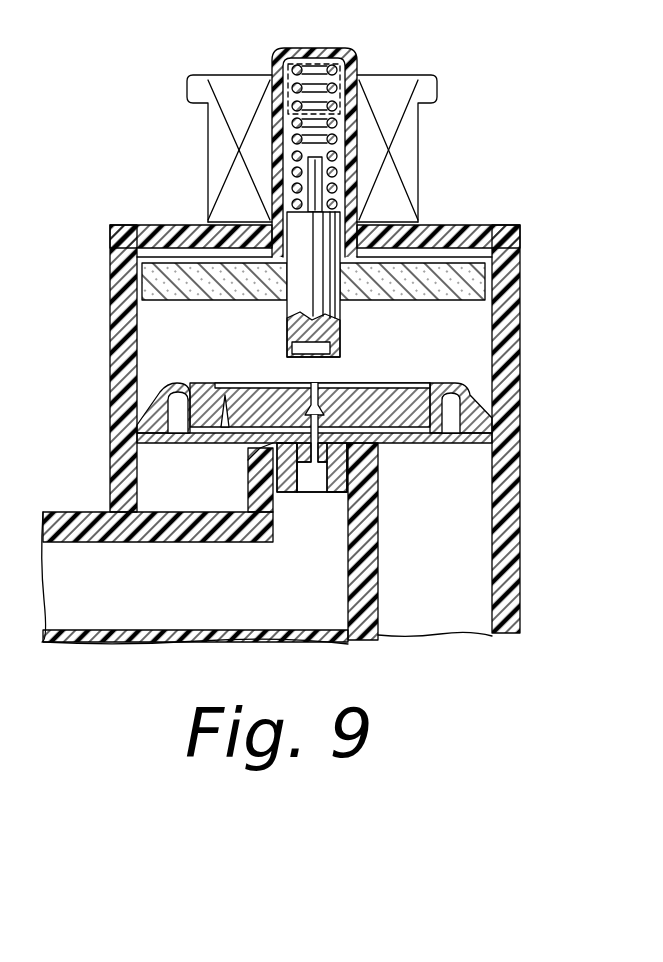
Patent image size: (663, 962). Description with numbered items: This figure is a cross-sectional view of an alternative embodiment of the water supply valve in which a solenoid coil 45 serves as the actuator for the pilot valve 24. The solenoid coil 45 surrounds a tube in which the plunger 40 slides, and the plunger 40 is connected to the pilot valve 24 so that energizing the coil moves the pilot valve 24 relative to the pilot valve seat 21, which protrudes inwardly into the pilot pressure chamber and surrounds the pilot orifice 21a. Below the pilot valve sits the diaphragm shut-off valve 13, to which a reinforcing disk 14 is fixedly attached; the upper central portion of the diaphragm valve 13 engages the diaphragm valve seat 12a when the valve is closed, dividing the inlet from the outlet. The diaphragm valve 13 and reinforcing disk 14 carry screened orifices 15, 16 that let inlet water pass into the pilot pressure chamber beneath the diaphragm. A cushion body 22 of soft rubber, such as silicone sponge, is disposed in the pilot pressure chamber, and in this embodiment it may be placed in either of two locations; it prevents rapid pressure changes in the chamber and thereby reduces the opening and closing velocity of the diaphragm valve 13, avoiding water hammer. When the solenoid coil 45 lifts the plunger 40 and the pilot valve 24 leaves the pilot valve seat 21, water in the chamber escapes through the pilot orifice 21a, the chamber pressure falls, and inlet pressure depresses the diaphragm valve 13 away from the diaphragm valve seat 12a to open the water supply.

The diaphragm valve seat 12a is at (365, 447).
The diaphragm shut-off valve 13 is at (460, 393).
The reinforcing disk 14 is at (400, 400).
The screened orifice 15 is at (218, 398).
The screened orifice 16 is at (190, 433).
The pilot valve seat 21 is at (320, 380).
The pilot orifice 21a is at (311, 415).
The cushion body 22 is at (337, 72).
The pilot valve 24 is at (292, 346).
The plunger 40 is at (290, 230).
The solenoid coil 45 is at (412, 130).